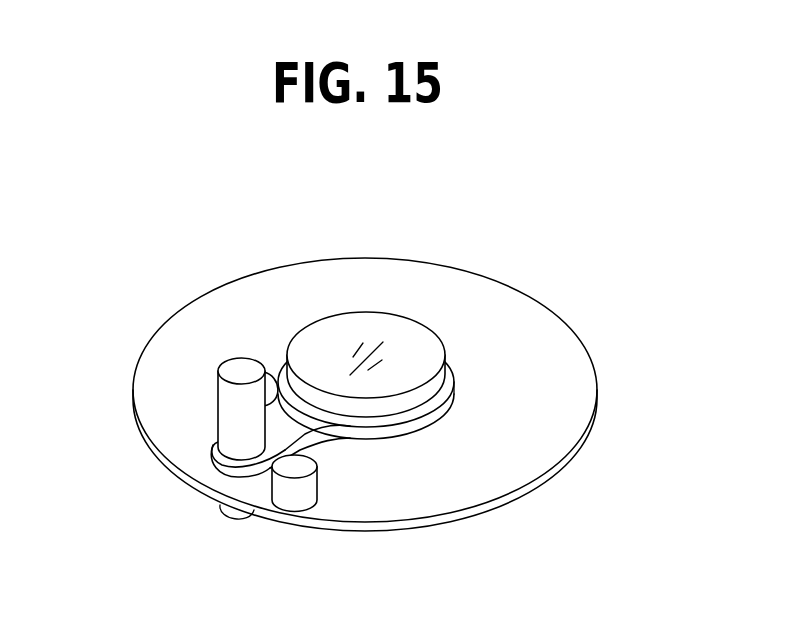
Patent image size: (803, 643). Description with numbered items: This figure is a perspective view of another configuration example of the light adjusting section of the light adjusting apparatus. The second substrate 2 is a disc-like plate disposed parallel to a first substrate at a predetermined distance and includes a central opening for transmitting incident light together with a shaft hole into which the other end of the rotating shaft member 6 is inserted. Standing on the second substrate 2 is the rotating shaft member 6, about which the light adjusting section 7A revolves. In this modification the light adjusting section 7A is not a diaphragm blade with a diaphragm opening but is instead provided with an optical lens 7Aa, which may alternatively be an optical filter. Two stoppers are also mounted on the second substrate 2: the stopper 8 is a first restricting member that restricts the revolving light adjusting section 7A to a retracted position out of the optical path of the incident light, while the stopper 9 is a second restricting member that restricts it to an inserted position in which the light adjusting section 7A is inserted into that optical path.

The second substrate 2 is at (568, 378).
The rotating shaft member 6 is at (232, 404).
The light adjusting section 7A is at (435, 418).
The optical lens 7Aa is at (366, 323).
The stopper 8 is at (312, 487).
The stopper 9 is at (268, 384).